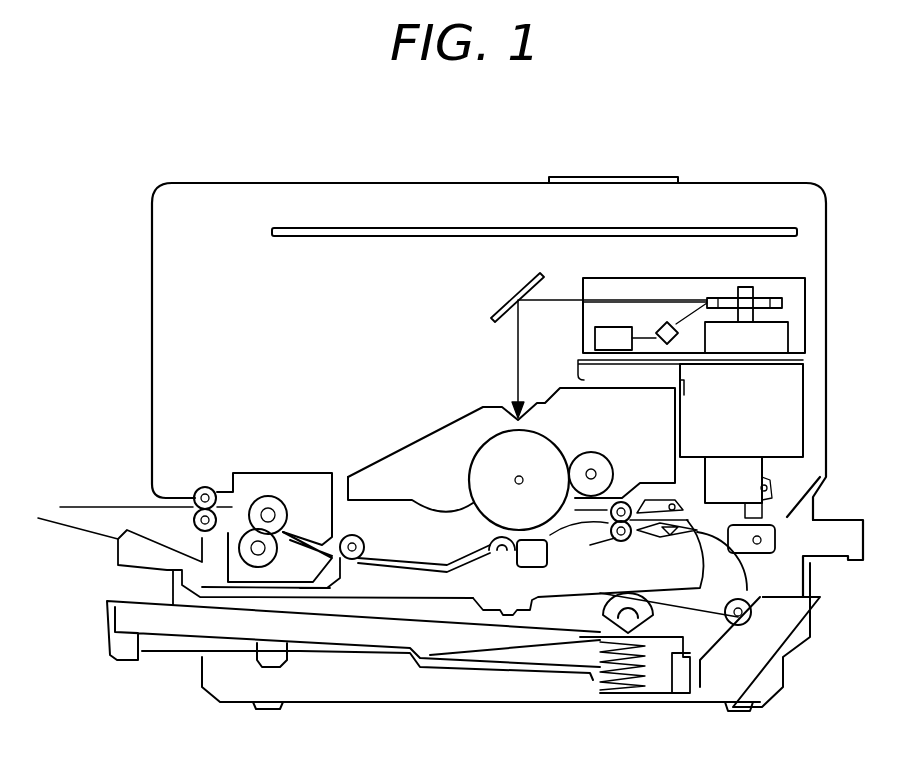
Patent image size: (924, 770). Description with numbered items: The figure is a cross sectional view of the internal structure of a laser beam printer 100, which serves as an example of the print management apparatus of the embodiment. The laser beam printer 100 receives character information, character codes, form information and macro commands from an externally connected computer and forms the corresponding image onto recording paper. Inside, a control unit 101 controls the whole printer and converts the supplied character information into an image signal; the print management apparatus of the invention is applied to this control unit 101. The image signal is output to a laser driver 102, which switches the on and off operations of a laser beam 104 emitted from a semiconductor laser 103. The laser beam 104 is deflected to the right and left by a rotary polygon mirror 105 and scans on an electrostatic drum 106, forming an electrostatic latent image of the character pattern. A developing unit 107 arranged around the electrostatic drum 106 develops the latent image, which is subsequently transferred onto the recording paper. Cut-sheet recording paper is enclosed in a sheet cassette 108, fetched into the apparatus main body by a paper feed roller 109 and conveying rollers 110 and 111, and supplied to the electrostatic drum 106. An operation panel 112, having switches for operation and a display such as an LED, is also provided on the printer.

The laser beam printer 100 is at (752, 185).
The control unit 101 is at (708, 231).
The laser driver 102 is at (592, 337).
The semiconductor laser 103 is at (670, 346).
The laser beam 104 is at (645, 302).
The rotary polygon mirror 105 is at (790, 331).
The electrostatic drum 106 is at (492, 450).
The developing unit 107 is at (395, 462).
The sheet cassette 108 is at (107, 633).
The paper feed roller 109 is at (606, 597).
The conveying roller 110 is at (752, 613).
The conveying roller 111 is at (633, 528).
The operation panel 112 is at (628, 178).